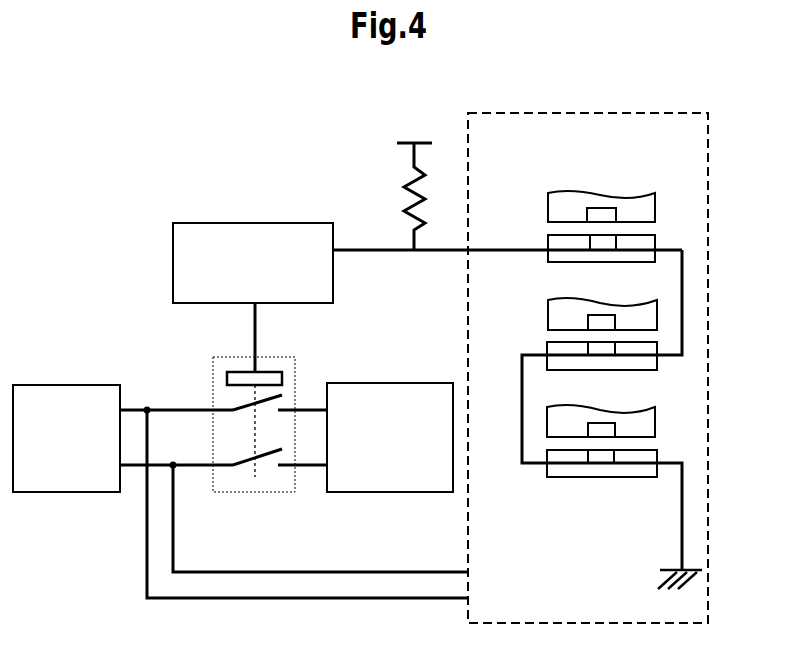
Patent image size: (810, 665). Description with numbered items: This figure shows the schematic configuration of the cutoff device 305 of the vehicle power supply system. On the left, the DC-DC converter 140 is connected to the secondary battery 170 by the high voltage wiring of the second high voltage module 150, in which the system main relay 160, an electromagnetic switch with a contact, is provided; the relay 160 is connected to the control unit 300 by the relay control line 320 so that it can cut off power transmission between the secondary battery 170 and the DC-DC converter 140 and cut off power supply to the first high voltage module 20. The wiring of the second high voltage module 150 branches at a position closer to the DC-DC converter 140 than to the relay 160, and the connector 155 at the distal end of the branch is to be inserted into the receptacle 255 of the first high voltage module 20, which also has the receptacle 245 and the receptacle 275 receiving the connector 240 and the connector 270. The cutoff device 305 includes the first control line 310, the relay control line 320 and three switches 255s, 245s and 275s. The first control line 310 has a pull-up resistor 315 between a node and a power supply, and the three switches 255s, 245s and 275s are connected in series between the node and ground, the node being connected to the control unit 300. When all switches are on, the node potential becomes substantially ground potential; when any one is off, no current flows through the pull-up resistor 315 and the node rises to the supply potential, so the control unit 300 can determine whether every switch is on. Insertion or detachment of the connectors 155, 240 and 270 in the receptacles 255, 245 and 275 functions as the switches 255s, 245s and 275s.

The first high voltage module 20 is at (613, 113).
The cutoff device 305 is at (286, 142).
The control unit 300 is at (325, 223).
The first control line 310 is at (346, 250).
The pull-up resistor 315 is at (410, 175).
The relay control line 320 is at (250, 346).
The system main relay 160 is at (285, 357).
The DC-DC converter 140 is at (85, 385).
The second high voltage module 150 is at (180, 410).
The secondary battery 170 is at (383, 383).
The connector 155 is at (655, 193).
The receptacle 255 is at (656, 254).
The switch 255s is at (674, 226).
The connector 270 is at (550, 300).
The receptacle 275 is at (548, 372).
The switch 275s is at (674, 335).
The connector 240 is at (657, 418).
The receptacle 245 is at (657, 472).
The switch 245s is at (674, 443).